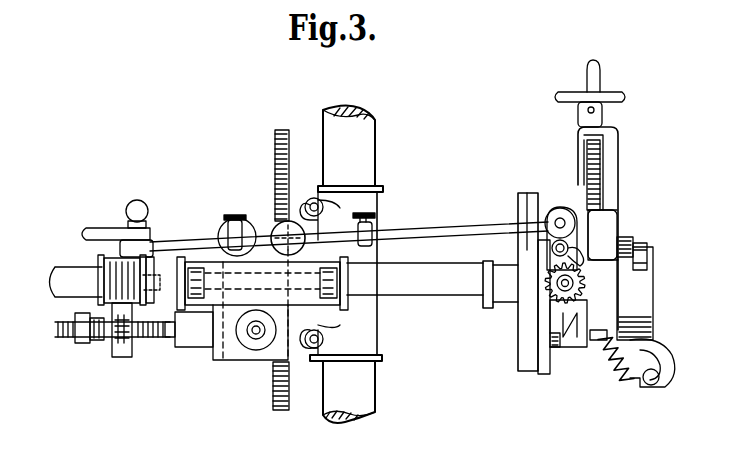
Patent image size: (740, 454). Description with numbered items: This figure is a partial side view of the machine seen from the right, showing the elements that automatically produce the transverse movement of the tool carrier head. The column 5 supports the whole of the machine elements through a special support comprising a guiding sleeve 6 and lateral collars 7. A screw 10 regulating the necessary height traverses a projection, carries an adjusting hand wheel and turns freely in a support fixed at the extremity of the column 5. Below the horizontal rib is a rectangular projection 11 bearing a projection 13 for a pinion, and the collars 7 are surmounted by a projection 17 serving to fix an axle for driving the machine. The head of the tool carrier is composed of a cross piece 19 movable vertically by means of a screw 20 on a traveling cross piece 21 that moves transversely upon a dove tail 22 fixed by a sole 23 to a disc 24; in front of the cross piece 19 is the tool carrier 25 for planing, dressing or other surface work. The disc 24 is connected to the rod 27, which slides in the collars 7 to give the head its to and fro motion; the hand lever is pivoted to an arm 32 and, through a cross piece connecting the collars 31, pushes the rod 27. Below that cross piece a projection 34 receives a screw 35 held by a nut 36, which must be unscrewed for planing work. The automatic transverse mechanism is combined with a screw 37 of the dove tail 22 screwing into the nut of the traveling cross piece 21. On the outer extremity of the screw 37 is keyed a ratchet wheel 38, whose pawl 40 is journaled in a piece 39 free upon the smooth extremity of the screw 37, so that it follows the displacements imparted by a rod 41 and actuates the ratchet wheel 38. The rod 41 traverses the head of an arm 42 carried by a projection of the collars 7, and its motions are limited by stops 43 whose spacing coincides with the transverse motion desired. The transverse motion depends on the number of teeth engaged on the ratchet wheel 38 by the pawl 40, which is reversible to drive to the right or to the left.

The column 5 is at (370, 162).
The guiding sleeve 6 is at (372, 336).
The lateral collars 7 is at (350, 265).
The screw 10 is at (275, 172).
The rectangular projection 11 is at (222, 352).
The projection 13 is at (190, 345).
The projection 17 is at (252, 225).
The cross piece 19 is at (620, 232).
The screw 20 is at (587, 183).
The traveling cross piece 21 is at (579, 343).
The dove tail 22 is at (566, 348).
The sole 23 is at (542, 374).
The disc 24 is at (520, 356).
The tool carrier 25 is at (652, 303).
The rod 27 is at (449, 297).
The collars 31 is at (104, 268).
The arm 32 is at (163, 232).
The projection 34 is at (121, 352).
The screw 35 is at (60, 339).
The nut 36 is at (86, 344).
The screw 37 is at (560, 288).
The ratchet wheel 38 is at (547, 276).
The piece 39 is at (556, 210).
The pawl 40 is at (634, 249).
The rod 41 is at (440, 231).
The arm 42 is at (292, 222).
The stops 43 is at (232, 230).